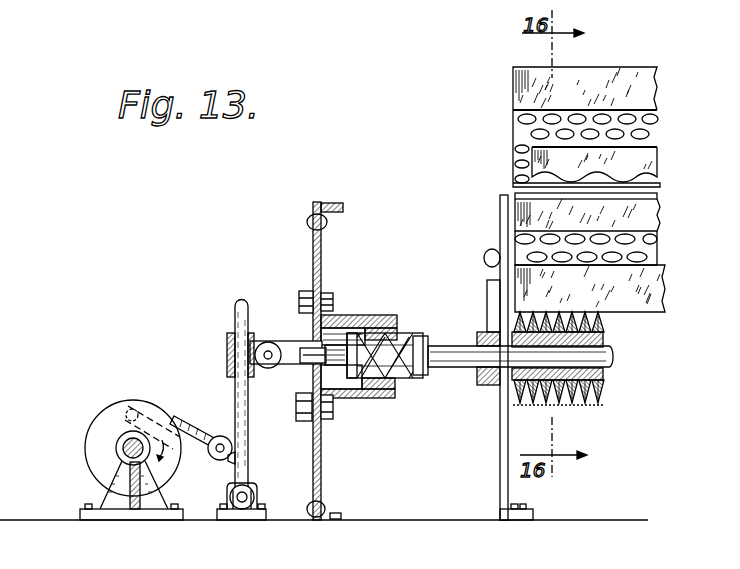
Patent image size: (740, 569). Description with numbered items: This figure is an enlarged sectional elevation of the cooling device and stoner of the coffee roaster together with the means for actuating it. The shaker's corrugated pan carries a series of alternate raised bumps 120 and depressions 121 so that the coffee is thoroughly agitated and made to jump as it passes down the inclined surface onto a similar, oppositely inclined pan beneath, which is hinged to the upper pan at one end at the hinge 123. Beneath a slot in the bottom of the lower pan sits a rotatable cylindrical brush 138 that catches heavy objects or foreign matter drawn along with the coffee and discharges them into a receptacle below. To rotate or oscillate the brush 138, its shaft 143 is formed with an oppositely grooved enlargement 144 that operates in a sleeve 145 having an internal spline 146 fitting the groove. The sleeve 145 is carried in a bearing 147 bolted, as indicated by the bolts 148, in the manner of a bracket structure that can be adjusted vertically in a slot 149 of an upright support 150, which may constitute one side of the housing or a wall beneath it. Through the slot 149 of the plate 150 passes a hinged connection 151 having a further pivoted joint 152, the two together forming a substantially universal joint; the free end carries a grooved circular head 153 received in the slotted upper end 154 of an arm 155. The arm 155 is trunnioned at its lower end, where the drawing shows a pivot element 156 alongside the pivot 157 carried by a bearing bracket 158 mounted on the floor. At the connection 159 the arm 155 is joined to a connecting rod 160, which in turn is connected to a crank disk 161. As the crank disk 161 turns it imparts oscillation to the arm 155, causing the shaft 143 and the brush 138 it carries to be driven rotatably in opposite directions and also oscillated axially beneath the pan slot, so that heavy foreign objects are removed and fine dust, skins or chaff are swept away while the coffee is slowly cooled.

The bumps 120 is at (648, 118).
The depressions 121 is at (645, 135).
The hinge 123 is at (632, 196).
The rotatable cylindrical brush 138 is at (588, 408).
The shaft 143 is at (600, 358).
The oppositely grooved enlargement 144 is at (405, 383).
The sleeve 145 is at (383, 400).
The internal spline 146 is at (395, 331).
The bearing 147 is at (343, 316).
The bolts 148 is at (305, 426).
The slot 149 is at (313, 268).
The upright support 150 is at (318, 245).
The hinged connection 151 is at (307, 347).
The pivoted joint 152 is at (268, 368).
The grooved circular head 153 is at (228, 350).
The slotted end 154 is at (240, 300).
The arm 155 is at (240, 434).
The pivot 156 is at (255, 496).
The pivot 157 is at (243, 510).
The bearing bracket 158 is at (228, 521).
The connection 159 is at (220, 436).
The connecting rod 160 is at (178, 416).
The crank disk 161 is at (93, 454).